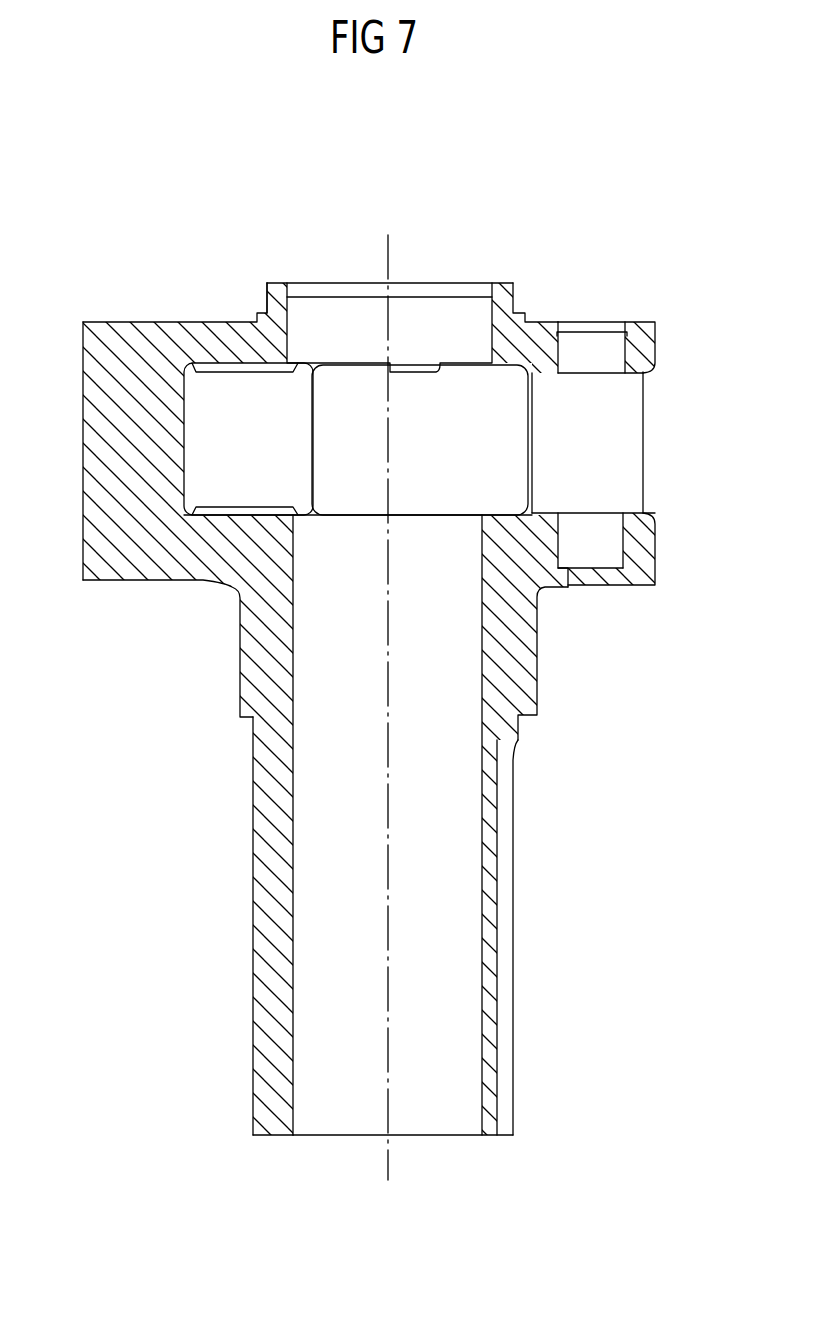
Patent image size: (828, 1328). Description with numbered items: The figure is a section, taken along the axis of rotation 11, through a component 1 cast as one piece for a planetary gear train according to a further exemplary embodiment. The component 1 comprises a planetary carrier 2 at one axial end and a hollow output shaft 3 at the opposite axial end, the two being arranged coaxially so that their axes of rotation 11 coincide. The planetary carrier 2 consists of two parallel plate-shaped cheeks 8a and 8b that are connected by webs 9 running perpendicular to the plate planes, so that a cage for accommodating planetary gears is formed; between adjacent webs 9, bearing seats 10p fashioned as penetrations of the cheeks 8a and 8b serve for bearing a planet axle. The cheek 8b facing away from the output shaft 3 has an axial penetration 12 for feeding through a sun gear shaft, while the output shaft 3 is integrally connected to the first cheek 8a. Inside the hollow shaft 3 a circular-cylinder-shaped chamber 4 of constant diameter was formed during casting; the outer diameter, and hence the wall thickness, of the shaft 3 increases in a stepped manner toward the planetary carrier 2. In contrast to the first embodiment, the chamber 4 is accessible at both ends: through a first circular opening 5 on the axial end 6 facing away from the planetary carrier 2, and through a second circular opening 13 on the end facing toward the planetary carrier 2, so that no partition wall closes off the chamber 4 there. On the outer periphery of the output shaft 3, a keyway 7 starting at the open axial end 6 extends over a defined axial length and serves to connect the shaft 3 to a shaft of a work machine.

The component 1 is at (318, 205).
The planetary carrier 2 is at (80, 487).
The output shaft 3 is at (265, 912).
The chamber 4 is at (455, 920).
The opening 5 is at (426, 1120).
The axial end 6 is at (240, 1133).
The keyway 7 is at (505, 1042).
The first cheek 8a is at (650, 543).
The second cheek 8b is at (650, 350).
The web 9 is at (125, 330).
The bearing seat 10p is at (605, 342).
The axis of rotation 11 is at (400, 243).
The axial penetration 12 is at (458, 312).
The second circular opening 13 is at (420, 512).